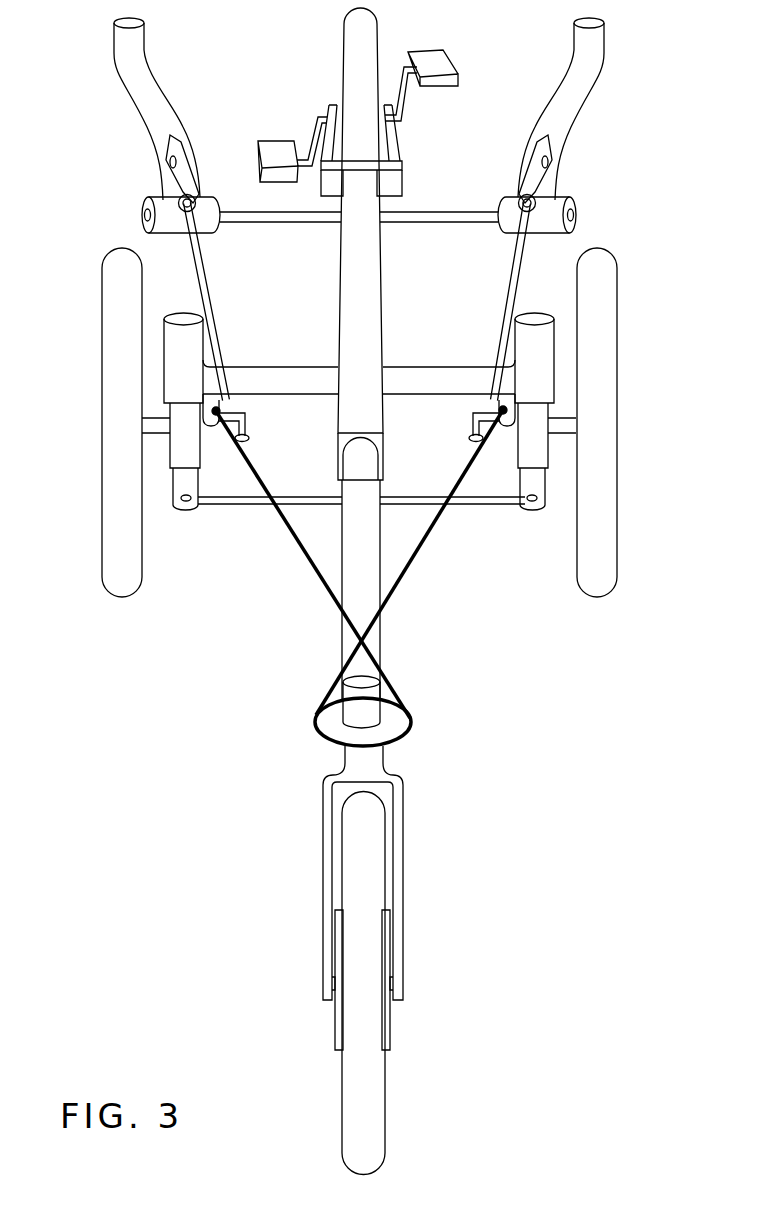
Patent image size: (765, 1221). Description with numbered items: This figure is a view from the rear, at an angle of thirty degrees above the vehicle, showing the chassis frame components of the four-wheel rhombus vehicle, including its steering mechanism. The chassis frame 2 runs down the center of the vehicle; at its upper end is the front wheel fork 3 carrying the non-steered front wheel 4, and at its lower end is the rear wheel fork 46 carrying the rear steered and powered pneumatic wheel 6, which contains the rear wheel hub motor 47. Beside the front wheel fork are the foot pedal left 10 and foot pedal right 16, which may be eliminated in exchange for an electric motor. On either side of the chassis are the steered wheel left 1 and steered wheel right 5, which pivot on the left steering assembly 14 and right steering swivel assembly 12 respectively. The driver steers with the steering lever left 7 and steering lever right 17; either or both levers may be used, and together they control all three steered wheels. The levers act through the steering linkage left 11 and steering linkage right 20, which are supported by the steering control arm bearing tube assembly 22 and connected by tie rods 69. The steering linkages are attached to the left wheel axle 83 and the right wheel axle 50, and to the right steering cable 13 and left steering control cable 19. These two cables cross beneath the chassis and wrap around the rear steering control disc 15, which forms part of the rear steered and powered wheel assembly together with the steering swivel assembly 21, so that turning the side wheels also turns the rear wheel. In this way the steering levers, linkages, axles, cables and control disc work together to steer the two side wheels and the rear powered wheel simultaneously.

The steered wheel left 1 is at (118, 342).
The chassis frame 2 is at (372, 318).
The front wheel fork 3 is at (395, 163).
The non-steered front wheel 4 is at (350, 62).
The steered wheel right 5 is at (610, 297).
The rear steered and powered pneumatic wheel 6 is at (355, 1076).
The steering lever left 7 is at (127, 93).
The foot pedal left 10 is at (278, 148).
The steering linkage left 11 is at (190, 248).
The right steering swivel assembly 12 is at (548, 360).
The right steering cable 13 is at (417, 563).
The left steering assembly 14 is at (197, 342).
The rear steering control disc 15 is at (412, 730).
The foot pedal right 16 is at (441, 63).
The steering lever right 17 is at (578, 103).
The left steering control cable 19 is at (325, 595).
The steering linkage right 20 is at (523, 253).
The steering swivel assembly 21 is at (348, 713).
The steering control arm bearing tube assembly 22 is at (267, 220).
The rear wheel fork 46 is at (402, 847).
The rear wheel hub motor 47 is at (388, 935).
The right wheel axle 50 is at (467, 418).
The tie rods 69 is at (237, 500).
The left wheel axle 83 is at (240, 417).